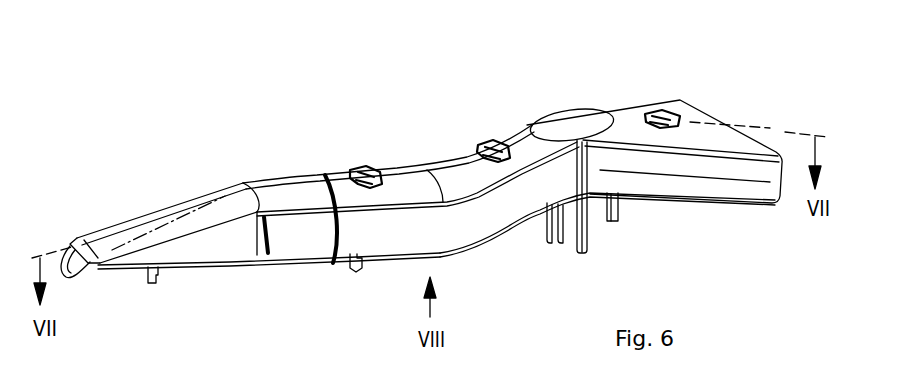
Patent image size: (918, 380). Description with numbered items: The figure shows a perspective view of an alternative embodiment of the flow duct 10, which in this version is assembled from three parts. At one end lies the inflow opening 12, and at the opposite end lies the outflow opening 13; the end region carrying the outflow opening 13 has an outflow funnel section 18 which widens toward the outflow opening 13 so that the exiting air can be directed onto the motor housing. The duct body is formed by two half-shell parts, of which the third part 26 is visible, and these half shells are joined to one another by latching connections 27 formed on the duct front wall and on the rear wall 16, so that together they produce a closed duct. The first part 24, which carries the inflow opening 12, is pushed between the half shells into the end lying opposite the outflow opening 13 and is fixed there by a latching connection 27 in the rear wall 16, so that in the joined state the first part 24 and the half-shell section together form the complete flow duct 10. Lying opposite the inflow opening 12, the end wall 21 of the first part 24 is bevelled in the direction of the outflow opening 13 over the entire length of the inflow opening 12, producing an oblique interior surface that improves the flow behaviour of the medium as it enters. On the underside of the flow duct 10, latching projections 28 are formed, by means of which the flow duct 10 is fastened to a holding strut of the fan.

The flow duct 10 is at (397, 152).
The inflow opening 12 is at (173, 268).
The outflow opening 13 is at (718, 117).
The rear wall 16 is at (460, 172).
The outflow funnel section 18 is at (700, 138).
The end wall 21 is at (133, 233).
The first part 24 is at (197, 243).
The third part 26 is at (512, 207).
The latching connection 27 is at (483, 142).
The latching projection 28 is at (587, 230).